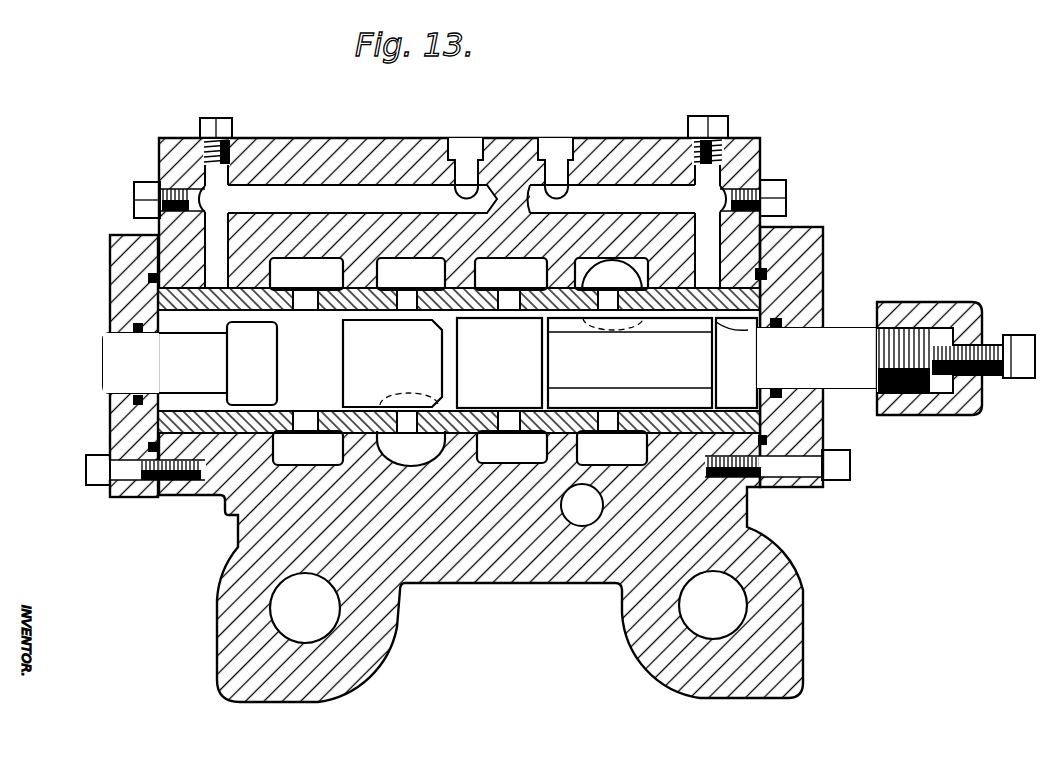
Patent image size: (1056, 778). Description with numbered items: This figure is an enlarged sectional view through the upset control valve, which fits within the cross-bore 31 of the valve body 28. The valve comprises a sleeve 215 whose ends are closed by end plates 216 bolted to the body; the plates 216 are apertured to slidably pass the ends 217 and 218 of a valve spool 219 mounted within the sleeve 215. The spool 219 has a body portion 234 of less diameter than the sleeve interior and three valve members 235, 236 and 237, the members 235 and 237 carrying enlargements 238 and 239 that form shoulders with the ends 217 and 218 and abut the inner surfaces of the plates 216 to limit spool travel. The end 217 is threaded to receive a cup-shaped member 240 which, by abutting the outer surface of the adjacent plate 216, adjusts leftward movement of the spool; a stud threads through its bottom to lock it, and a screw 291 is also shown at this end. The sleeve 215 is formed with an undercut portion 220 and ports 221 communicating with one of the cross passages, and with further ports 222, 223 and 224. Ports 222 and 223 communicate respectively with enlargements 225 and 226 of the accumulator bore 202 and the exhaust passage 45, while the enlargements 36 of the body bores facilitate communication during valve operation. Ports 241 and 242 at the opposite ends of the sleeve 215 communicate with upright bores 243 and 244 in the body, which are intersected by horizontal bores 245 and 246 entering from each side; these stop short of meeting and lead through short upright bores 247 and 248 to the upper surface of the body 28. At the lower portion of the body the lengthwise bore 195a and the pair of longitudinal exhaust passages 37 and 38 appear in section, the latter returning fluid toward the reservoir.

The valve body 28 is at (240, 134).
The horizontal bore 245 is at (298, 195).
The body portion 234 is at (372, 345).
The short upright bore 247 is at (460, 144).
The short upright bore 248 is at (553, 144).
The bore 202 is at (612, 262).
The horizontal bore 246 is at (650, 195).
The upright bore 243 is at (210, 178).
The upright bore 244 is at (712, 176).
The cross-bore 31 is at (762, 290).
The end plate 216 is at (125, 255).
The sleeve 215 is at (170, 305).
The spool end 218 is at (115, 342).
The valve spool 219 is at (104, 372).
The spool end 217 is at (851, 306).
The cup-shaped member 240 is at (931, 308).
The adjusting screw 291 is at (990, 376).
The port 241 is at (223, 301).
The enlargement 239 is at (241, 357).
The port 224 is at (308, 302).
The valve member 237 is at (310, 420).
The port 223 is at (411, 420).
The valve member 236 is at (469, 337).
The port 221 is at (504, 418).
The undercut portion 220 is at (529, 418).
The port 222 is at (617, 418).
The valve member 235 is at (679, 344).
The enlargement 238 is at (727, 367).
The port 242 is at (817, 358).
The enlargement 36 is at (560, 470).
The exhaust passage 37 is at (278, 602).
The exhaust passage 38 is at (742, 608).
The enlargement 226 is at (400, 470).
The passage 45 is at (428, 458).
The bore 195a is at (583, 527).
The enlargement 225 is at (622, 456).